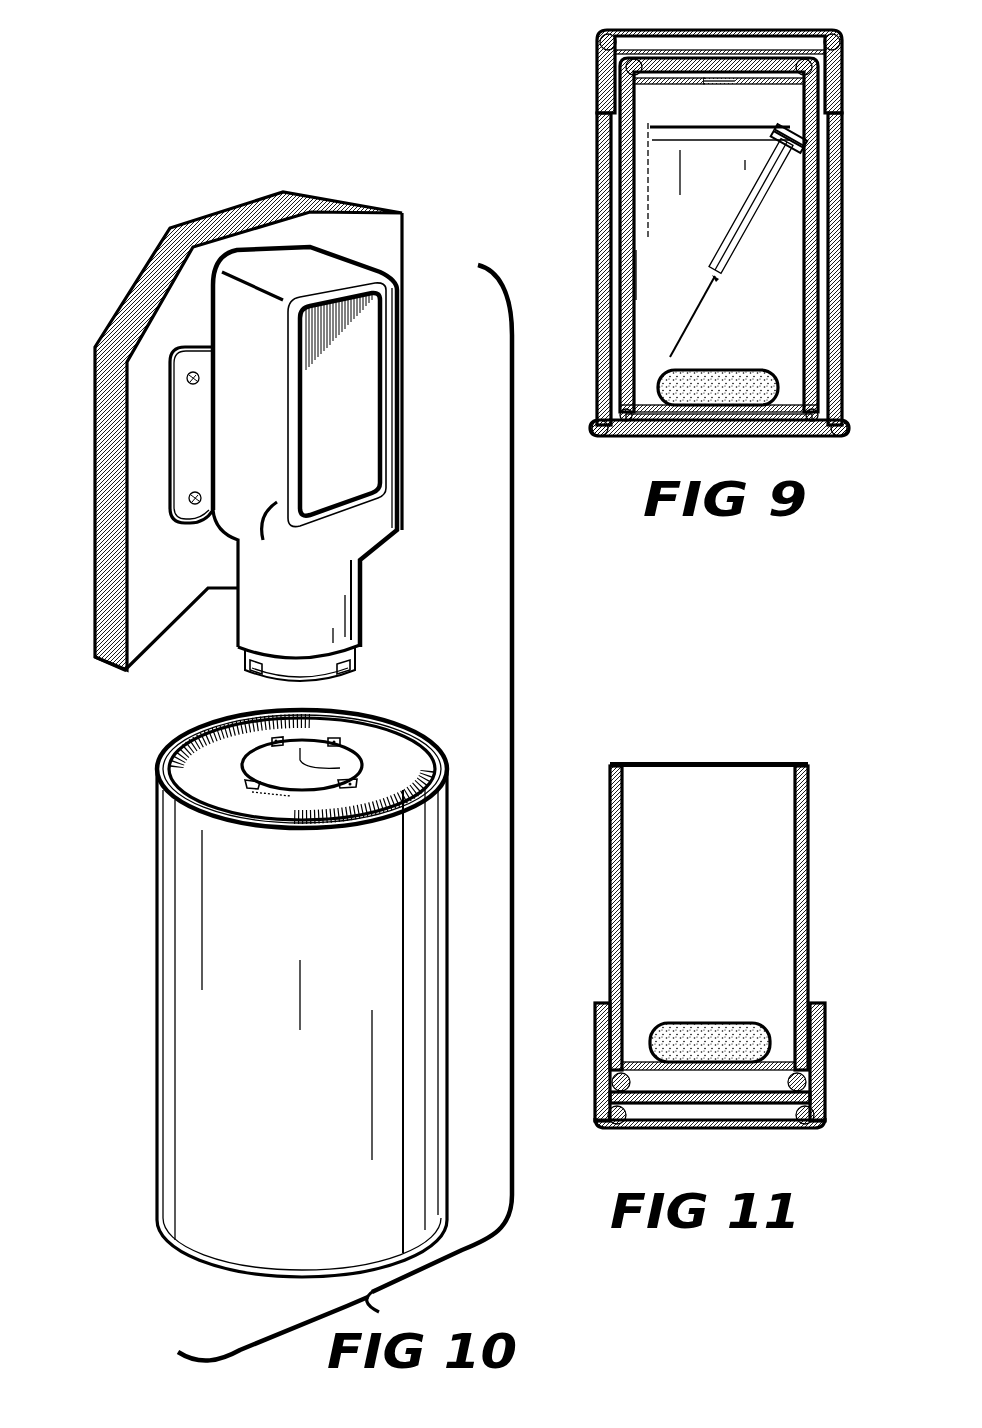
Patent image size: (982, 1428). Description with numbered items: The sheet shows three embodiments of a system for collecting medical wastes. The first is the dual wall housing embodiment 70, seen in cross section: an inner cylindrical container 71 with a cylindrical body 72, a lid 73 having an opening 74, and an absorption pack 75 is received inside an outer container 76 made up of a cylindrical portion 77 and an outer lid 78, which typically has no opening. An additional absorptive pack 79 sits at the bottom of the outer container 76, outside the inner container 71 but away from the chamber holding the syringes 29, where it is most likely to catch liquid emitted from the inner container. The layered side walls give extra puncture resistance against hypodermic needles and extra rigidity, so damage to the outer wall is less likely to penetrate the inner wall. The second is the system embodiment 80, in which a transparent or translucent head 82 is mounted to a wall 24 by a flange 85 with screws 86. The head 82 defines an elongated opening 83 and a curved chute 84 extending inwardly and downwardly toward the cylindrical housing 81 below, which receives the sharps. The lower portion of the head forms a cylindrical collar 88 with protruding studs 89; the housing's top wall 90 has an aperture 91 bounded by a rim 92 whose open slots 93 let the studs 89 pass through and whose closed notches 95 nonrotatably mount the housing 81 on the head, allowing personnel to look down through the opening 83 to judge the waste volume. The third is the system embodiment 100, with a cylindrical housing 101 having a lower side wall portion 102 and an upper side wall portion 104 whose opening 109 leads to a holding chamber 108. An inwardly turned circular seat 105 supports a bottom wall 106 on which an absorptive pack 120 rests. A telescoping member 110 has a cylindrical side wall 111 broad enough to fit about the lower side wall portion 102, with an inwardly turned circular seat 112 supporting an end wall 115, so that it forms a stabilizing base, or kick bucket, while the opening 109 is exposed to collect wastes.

In FIG. 10, the wall 24 is at (388, 243).
In FIG. 9, the syringe 29 is at (728, 244).
In FIG. 9, the dual wall housing embodiment 70 is at (554, 142).
In FIG. 9, the inner cylindrical container 71 is at (610, 297).
In FIG. 9, the cylindrical body 72 is at (681, 235).
In FIG. 9, the lid 73 is at (663, 86).
In FIG. 9, the opening 74 is at (712, 86).
In FIG. 9, the absorption pack 75 is at (736, 372).
In FIG. 9, the outer container 76 is at (728, 228).
In FIG. 9, the cylindrical portion 77 is at (845, 178).
In FIG. 9, the outer lid 78 is at (596, 82).
In FIG. 9, the additional absorptive pack 79 is at (737, 435).
In FIG. 10, the system embodiment 80 is at (90, 730).
In FIG. 10, the cylindrical housing 81 is at (150, 905).
In FIG. 10, the head 82 is at (327, 470).
In FIG. 10, the elongated opening 83 is at (355, 406).
In FIG. 10, the curved chute 84 is at (238, 546).
In FIG. 10, the flange 85 is at (193, 440).
In FIG. 10, the screws 86 is at (194, 372).
In FIG. 10, the cylindrical collar 88 is at (280, 668).
In FIG. 10, the protruding studs 89 is at (353, 668).
In FIG. 10, the top wall 90 is at (198, 730).
In FIG. 10, the aperture 91 is at (258, 763).
In FIG. 10, the rim 92 is at (350, 768).
In FIG. 10, the open slots 93 is at (268, 736).
In FIG. 10, the closed notches 95 is at (307, 748).
In FIG. 11, the system embodiment 100 is at (588, 937).
In FIG. 11, the cylindrical housing 101 is at (610, 973).
In FIG. 11, the lower side wall portion 102 is at (597, 1066).
In FIG. 11, the upper side wall portion 104 is at (667, 897).
In FIG. 11, the circular seat 105 is at (597, 1074).
In FIG. 11, the bottom wall 106 is at (641, 1057).
In FIG. 11, the holding chamber 108 is at (610, 768).
In FIG. 11, the opening 109 is at (717, 760).
In FIG. 11, the telescoping member 110 is at (826, 1052).
In FIG. 11, the cylindrical side wall 111 is at (719, 1046).
In FIG. 11, the circular seat 112 is at (621, 1121).
In FIG. 11, the end wall 115 is at (732, 1106).
In FIG. 11, the absorptive pack 120 is at (749, 1022).